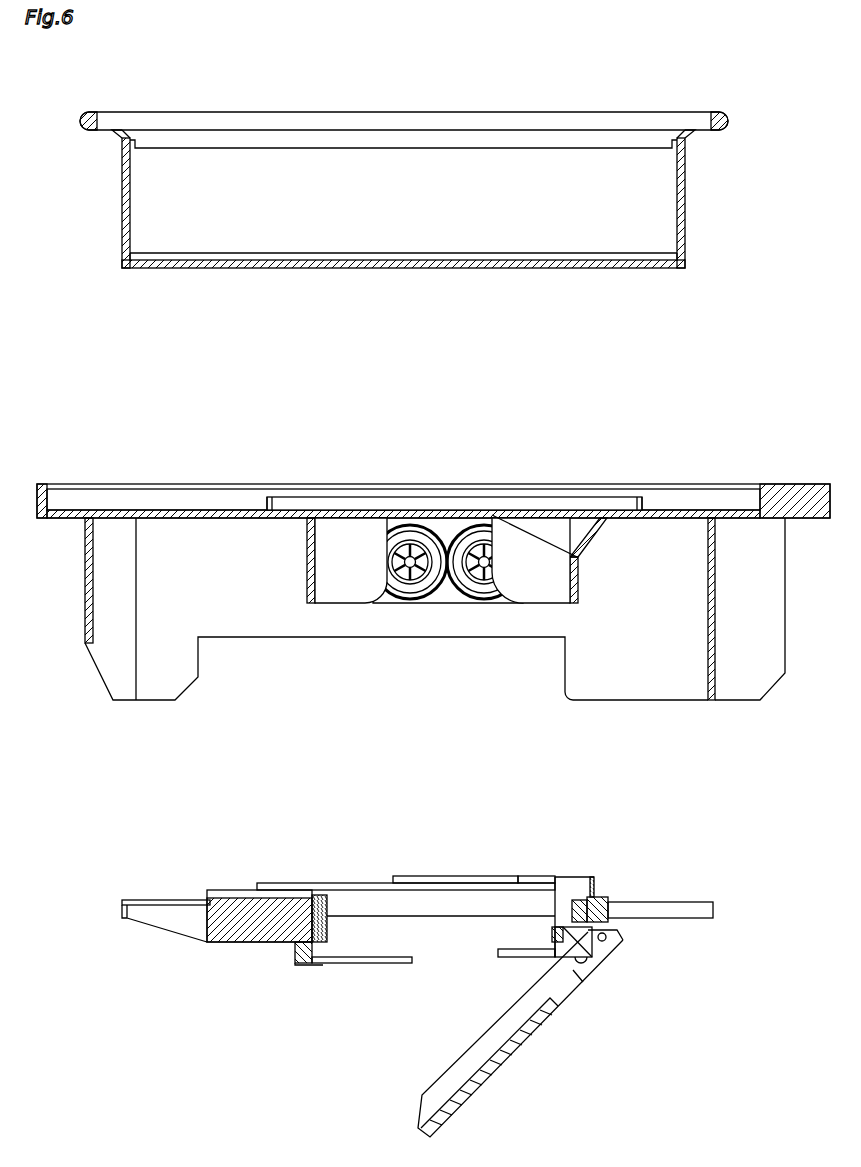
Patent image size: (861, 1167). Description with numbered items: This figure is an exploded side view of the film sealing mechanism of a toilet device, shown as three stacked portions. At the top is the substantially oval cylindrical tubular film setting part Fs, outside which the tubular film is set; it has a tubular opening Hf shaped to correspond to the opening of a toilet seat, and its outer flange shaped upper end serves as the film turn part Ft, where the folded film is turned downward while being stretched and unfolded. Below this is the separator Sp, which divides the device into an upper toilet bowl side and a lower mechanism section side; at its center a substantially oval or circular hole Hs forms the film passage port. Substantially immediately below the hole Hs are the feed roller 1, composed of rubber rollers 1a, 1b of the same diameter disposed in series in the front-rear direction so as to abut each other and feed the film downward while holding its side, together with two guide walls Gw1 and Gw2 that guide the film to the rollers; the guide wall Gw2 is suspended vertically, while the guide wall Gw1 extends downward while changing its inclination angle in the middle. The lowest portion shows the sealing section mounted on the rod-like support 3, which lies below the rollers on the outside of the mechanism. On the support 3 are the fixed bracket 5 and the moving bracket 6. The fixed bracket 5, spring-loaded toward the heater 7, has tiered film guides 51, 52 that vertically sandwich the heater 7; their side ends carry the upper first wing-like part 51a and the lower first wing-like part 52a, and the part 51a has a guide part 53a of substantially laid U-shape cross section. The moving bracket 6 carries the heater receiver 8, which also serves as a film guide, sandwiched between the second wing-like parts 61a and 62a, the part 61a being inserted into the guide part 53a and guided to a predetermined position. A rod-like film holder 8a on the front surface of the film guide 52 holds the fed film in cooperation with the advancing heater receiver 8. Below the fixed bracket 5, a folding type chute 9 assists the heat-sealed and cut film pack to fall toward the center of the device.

The film turn part Ft is at (112, 115).
The tubular opening Hf is at (225, 182).
The tubular film setting part Fs is at (122, 195).
The guide wall Gw2 is at (358, 552).
The hole Hs is at (447, 516).
The guide wall Gw1 is at (535, 552).
The separator Sp is at (673, 510).
The rubber roller 1a is at (407, 593).
The rubber roller 1b is at (447, 590).
The feed roller 1 is at (448, 629).
The rod-like support 3 is at (126, 920).
The fixed bracket 5 is at (603, 889).
The moving bracket 6 is at (268, 947).
The heater 7 is at (575, 905).
The heater receiver 8 is at (318, 894).
The film holder 8a is at (552, 934).
The chute 9 is at (487, 1085).
The film guide 51 is at (580, 878).
The upper first wing-like part 51a is at (537, 875).
The film guide 52 is at (603, 952).
The lower first wing-like part 52a is at (507, 958).
The guide part 53a is at (467, 875).
The second wing-like part 61a is at (357, 882).
The second wing-like part 62a is at (367, 964).